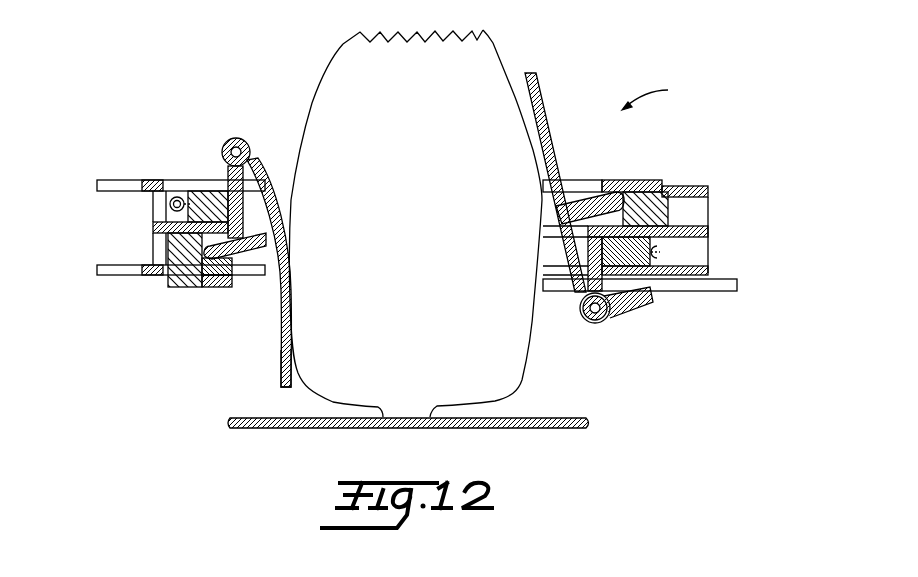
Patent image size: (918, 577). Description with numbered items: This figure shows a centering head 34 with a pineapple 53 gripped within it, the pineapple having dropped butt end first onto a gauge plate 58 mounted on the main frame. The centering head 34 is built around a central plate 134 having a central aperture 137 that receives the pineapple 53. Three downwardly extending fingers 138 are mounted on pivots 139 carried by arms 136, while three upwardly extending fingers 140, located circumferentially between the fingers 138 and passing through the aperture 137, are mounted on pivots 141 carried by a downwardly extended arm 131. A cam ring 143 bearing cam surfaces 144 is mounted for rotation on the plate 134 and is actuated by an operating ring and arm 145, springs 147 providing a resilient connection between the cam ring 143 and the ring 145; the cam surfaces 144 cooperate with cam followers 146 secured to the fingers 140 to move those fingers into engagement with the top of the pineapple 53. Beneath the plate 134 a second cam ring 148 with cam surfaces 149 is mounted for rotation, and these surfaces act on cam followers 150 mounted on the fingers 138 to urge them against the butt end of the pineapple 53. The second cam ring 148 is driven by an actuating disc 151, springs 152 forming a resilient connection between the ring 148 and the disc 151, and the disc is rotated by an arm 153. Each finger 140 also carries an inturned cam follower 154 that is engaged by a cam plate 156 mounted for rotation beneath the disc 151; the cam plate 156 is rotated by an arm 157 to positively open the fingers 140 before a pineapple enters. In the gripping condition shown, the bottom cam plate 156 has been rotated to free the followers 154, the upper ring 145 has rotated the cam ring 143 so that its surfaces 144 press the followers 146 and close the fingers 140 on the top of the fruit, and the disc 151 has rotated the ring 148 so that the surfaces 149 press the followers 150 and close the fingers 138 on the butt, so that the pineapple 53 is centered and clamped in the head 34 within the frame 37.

The centering head 34 is at (658, 95).
The frame 37 is at (708, 191).
The pineapple 53 is at (413, 190).
The gauge plate 58 is at (590, 422).
The downwardly extended arm 131 is at (571, 287).
The central plate 134 is at (690, 228).
The arm 136 is at (228, 176).
The central aperture 137 is at (270, 190).
The downwardly extending finger 138 is at (281, 344).
The pivot 139 is at (240, 138).
The upwardly extending finger 140 is at (534, 107).
The pivot 141 is at (600, 313).
The cam ring 143 is at (671, 196).
The cam surface 144 is at (625, 212).
The operating ring and arm 145 is at (118, 180).
The cam follower 146 is at (583, 205).
The spring 147 is at (176, 197).
The second cam ring 148 is at (173, 255).
The cam surface 149 is at (206, 273).
The cam follower 150 is at (248, 258).
The actuating disc 151 is at (648, 282).
The spring 152 is at (664, 248).
The arm 153 is at (113, 268).
The inturned cam follower 154 is at (630, 305).
The cam plate 156 is at (185, 286).
The arm 157 is at (711, 291).